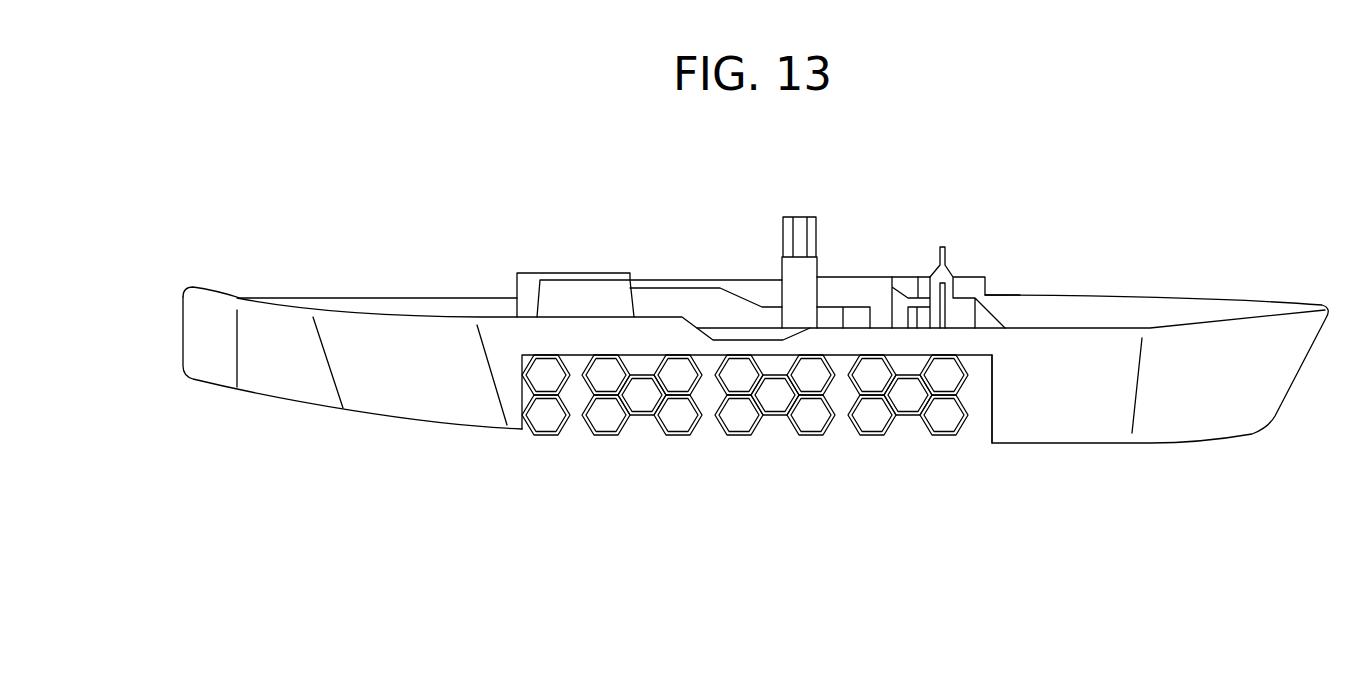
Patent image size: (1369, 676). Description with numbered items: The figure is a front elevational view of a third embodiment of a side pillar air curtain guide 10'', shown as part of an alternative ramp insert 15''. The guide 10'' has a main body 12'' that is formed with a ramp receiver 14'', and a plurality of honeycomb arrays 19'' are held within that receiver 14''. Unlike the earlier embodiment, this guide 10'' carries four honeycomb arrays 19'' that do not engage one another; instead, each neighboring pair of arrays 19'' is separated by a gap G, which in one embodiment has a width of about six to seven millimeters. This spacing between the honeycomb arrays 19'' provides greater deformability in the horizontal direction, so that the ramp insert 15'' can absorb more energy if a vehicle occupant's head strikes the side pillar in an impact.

The side pillar air curtain guide 10'' is at (754, 280).
The main body 12'' is at (1156, 346).
The ramp receiver 14'' is at (732, 335).
The ramp insert 15'' is at (736, 462).
The honeycomb arrays 19'' is at (693, 462).
The gap G is at (576, 426).